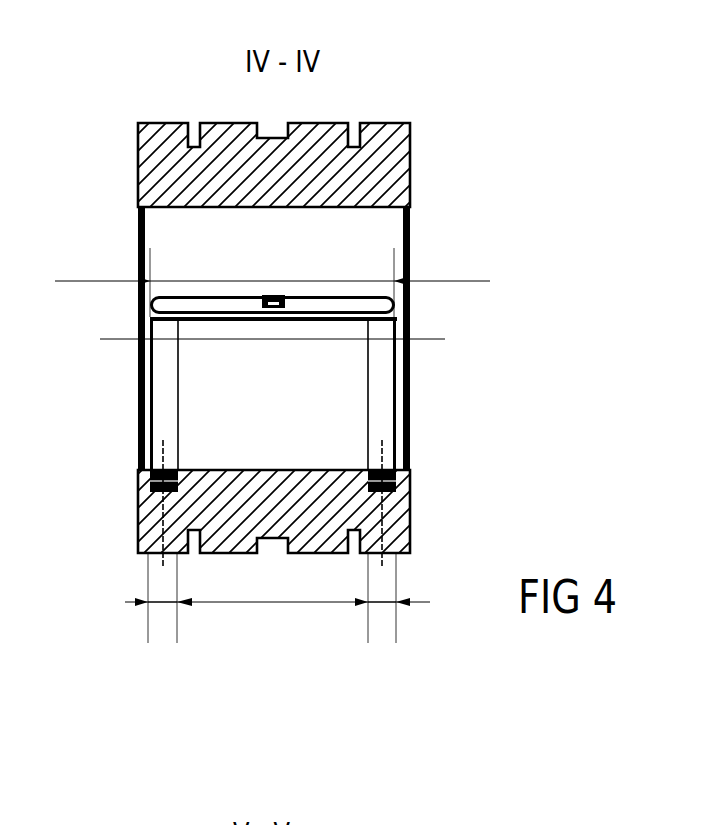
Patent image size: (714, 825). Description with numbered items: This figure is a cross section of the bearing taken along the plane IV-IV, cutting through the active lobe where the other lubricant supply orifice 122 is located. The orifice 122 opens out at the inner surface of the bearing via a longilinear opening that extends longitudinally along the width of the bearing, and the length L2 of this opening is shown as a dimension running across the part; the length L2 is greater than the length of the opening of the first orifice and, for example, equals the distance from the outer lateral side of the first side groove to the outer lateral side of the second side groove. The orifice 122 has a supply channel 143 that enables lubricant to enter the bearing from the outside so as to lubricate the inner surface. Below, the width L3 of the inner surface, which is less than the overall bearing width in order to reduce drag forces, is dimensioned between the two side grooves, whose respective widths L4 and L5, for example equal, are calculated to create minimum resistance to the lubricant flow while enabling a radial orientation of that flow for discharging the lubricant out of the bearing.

The other lubricant supply orifice 122 is at (393, 303).
The supply channel 143 is at (262, 298).
The length of the opening of the other orifice L2 is at (272, 282).
The width of the inner surface L3 is at (277, 598).
The width of the first side groove L4 is at (160, 600).
The width of the second side groove L5 is at (375, 602).